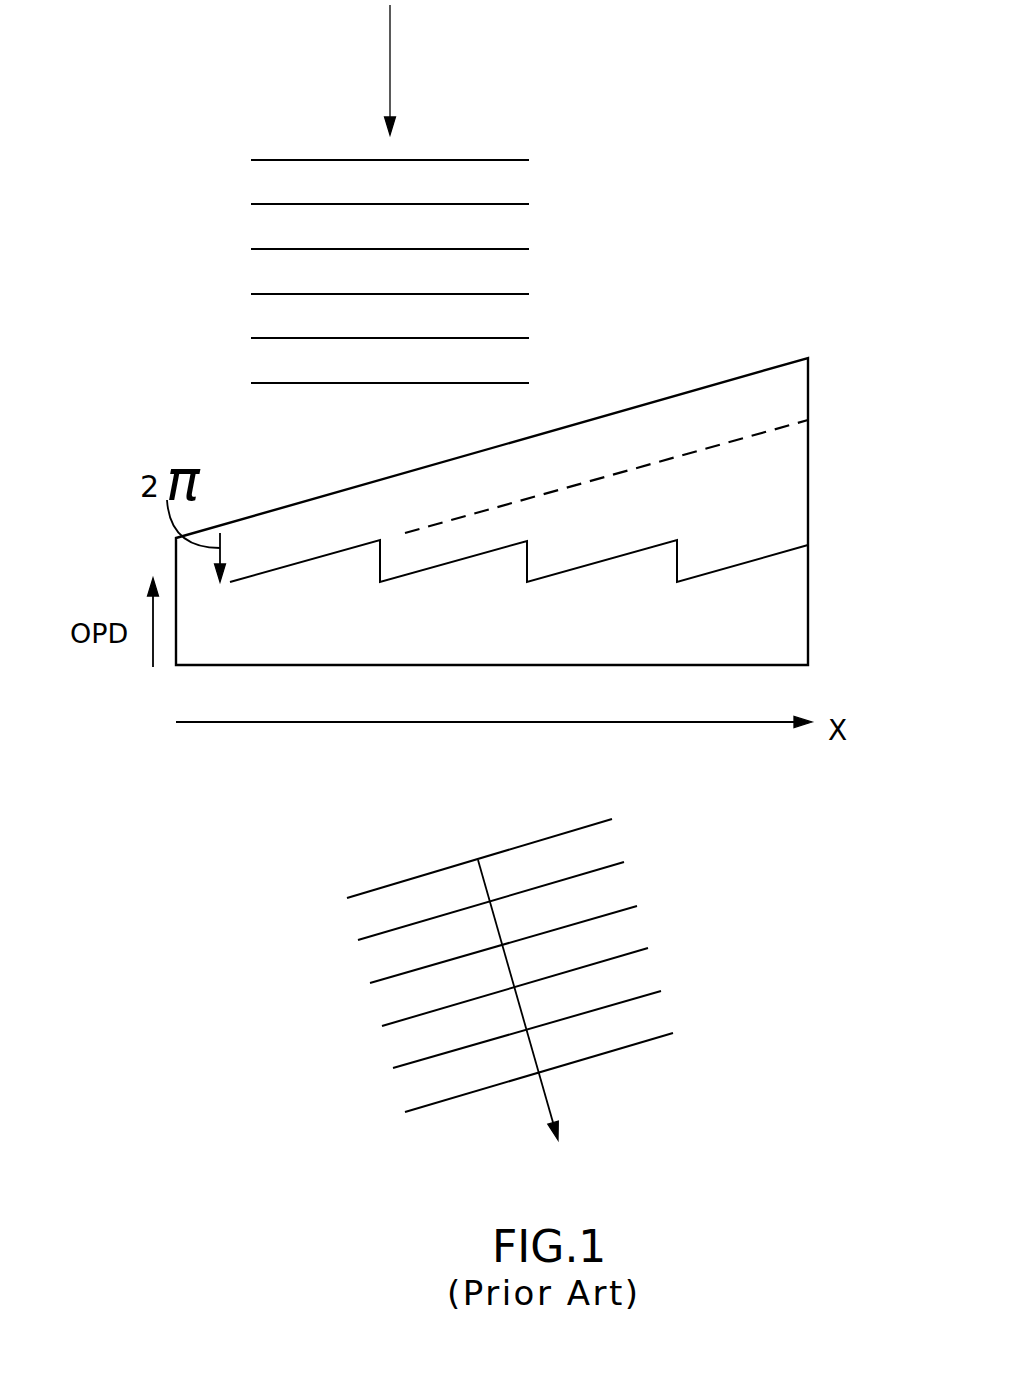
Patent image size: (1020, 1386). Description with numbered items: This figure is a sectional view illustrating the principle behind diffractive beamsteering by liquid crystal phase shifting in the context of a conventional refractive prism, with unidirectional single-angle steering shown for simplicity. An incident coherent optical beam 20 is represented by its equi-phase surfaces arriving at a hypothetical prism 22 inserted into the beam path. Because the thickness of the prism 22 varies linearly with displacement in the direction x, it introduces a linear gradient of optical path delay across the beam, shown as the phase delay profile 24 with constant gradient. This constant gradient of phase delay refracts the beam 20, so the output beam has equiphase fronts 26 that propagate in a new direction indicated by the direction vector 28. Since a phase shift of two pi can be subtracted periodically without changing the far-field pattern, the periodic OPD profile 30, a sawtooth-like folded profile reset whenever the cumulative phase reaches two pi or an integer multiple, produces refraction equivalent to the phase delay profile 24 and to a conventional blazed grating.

The incident coherent optical beam 20 is at (460, 137).
The hypothetical prism 22 is at (831, 618).
The phase delay profile 24 is at (697, 448).
The equiphase fronts 26 is at (372, 863).
The direction vector 28 is at (548, 1095).
The periodic OPD profile 30 is at (457, 560).